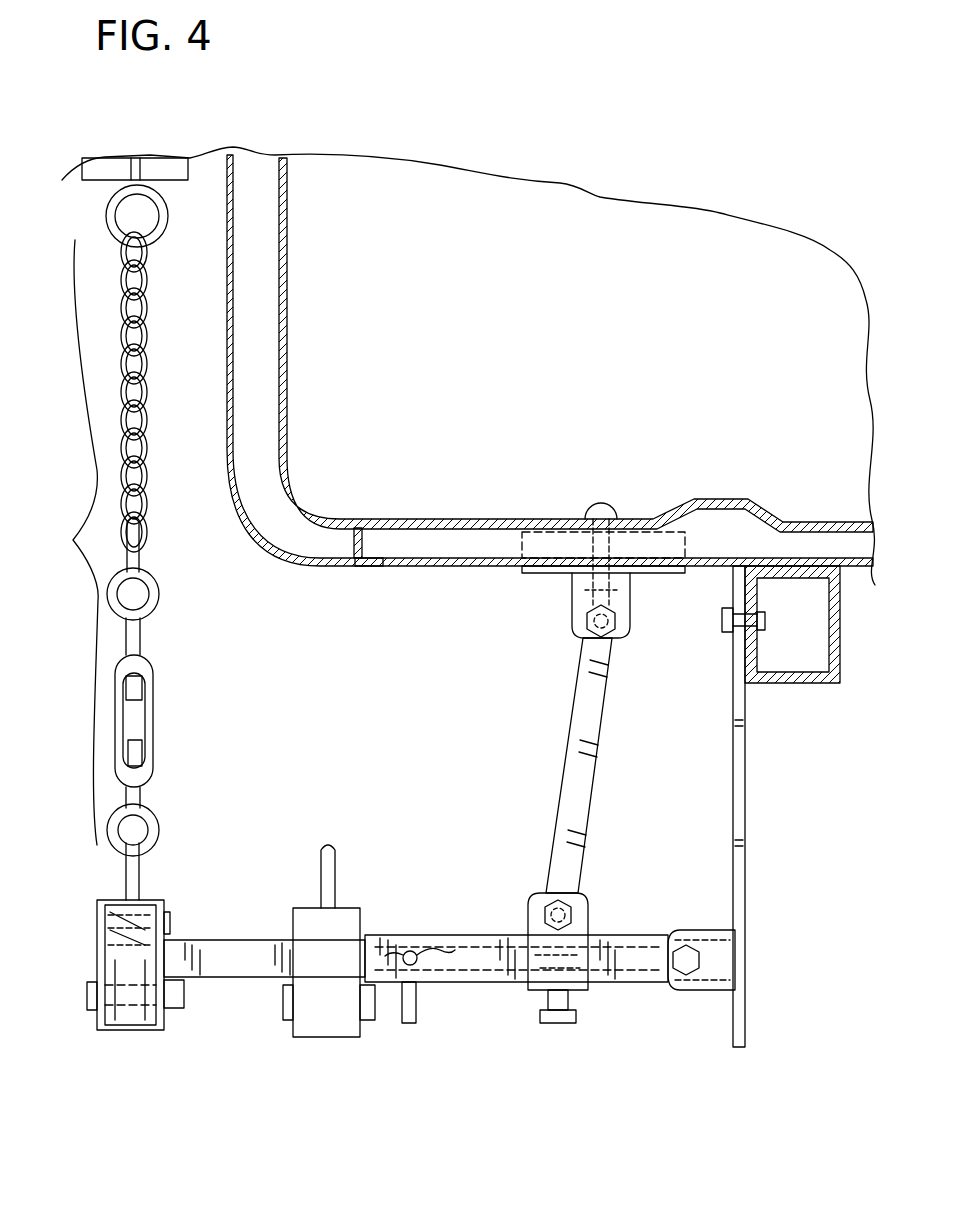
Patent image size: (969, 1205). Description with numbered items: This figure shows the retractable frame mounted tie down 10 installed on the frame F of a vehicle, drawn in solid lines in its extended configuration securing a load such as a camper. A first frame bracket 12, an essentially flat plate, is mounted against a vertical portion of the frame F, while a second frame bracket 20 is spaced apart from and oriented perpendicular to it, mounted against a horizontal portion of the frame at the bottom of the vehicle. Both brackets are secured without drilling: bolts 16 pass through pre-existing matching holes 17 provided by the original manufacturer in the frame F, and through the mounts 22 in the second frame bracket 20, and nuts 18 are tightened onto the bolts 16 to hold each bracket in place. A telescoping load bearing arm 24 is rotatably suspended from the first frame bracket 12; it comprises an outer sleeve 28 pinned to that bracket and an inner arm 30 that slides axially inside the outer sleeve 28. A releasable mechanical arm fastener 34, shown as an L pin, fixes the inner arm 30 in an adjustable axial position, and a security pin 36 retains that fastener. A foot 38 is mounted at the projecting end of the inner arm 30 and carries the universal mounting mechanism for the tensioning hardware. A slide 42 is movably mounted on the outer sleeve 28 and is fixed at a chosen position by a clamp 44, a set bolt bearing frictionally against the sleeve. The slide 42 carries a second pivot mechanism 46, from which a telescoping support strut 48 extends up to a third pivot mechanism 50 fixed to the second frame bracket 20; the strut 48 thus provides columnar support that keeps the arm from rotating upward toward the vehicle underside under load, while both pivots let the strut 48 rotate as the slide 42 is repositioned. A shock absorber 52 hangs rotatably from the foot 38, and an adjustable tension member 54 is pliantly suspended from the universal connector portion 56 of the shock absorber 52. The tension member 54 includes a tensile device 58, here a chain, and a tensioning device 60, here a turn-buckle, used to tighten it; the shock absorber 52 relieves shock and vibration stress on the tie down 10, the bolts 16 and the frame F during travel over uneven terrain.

The retractable frame mounted tie down 10 is at (373, 981).
The first frame bracket 12 is at (745, 800).
The bolt 16 is at (600, 508).
The pre-existing matching hole 17 is at (760, 616).
The nut 18 is at (585, 598).
The second frame bracket 20 is at (540, 575).
The mount 22 is at (610, 590).
The telescoping load bearing arm 24 is at (410, 922).
The outer sleeve 28 is at (500, 982).
The inner arm 30 is at (215, 977).
The releasable mechanical arm fastener 34 is at (410, 1010).
The security pin 36 is at (440, 950).
The foot 38 is at (168, 1022).
The slide 42 is at (588, 905).
The clamp 44 is at (576, 1016).
The second pivot mechanism 46 is at (556, 910).
The telescoping support strut 48 is at (600, 682).
The third pivot mechanism 50 is at (628, 618).
The shock absorber 52 is at (97, 958).
The adjustable tension member 54 is at (128, 529).
The universal connector portion 56 is at (130, 865).
The tensile device 58 is at (158, 500).
The tensioning device 60 is at (150, 775).
The frame F is at (840, 642).